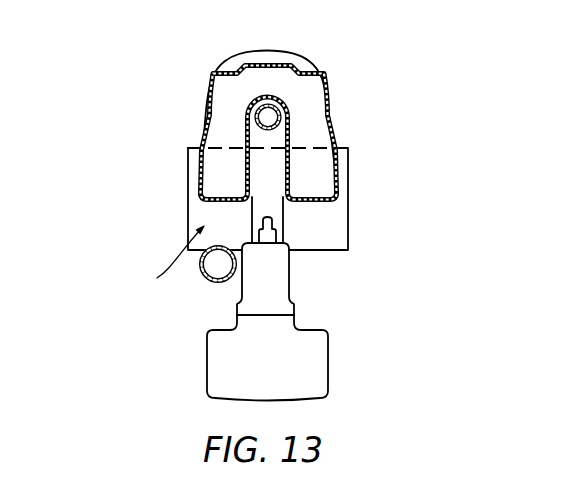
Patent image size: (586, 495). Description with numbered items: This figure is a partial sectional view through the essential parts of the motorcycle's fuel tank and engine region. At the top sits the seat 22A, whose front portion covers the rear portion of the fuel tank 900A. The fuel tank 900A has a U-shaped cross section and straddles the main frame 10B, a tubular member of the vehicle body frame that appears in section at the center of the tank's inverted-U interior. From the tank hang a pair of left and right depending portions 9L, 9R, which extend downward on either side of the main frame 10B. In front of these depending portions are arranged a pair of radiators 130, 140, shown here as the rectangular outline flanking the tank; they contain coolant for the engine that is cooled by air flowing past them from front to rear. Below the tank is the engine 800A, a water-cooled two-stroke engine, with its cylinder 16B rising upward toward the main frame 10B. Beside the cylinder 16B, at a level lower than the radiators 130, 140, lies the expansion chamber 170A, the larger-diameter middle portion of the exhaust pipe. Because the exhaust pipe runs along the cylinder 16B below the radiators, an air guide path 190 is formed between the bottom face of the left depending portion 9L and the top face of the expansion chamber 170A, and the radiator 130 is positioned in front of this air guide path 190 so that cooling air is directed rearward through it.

The seat 22A is at (283, 47).
The main frame 10B is at (280, 128).
The fuel tank 900A is at (338, 128).
The left depending portion 9L is at (188, 170).
The right depending portion 9R is at (342, 170).
The radiator 130 is at (188, 220).
The radiator 140 is at (350, 236).
The air guide path 190 is at (160, 259).
The expansion chamber 170A is at (209, 282).
The cylinder 16B is at (279, 281).
The engine 800A is at (313, 348).